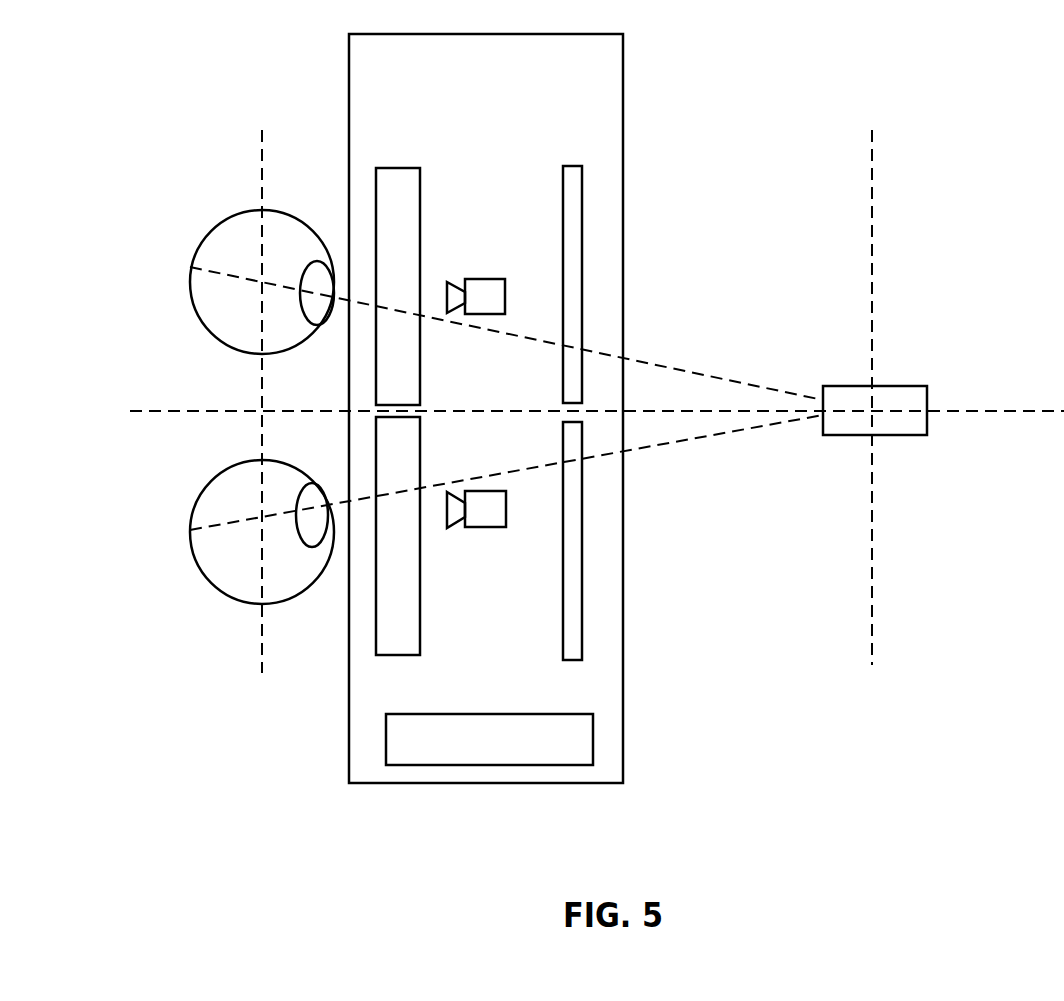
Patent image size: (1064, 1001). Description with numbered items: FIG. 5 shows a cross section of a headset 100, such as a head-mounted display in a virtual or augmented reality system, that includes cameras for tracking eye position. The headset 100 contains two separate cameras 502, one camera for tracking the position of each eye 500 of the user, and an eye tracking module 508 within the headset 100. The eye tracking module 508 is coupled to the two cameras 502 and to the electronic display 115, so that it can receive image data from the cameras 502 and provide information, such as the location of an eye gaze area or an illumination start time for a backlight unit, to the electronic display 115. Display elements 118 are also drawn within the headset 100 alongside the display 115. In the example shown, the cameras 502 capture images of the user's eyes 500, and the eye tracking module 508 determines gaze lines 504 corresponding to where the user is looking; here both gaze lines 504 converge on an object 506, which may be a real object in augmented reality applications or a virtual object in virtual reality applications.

The headset 100 is at (592, 36).
The display panel 118 is at (392, 180).
The electronic display 115 is at (576, 223).
The cameras 502 is at (476, 280).
The eye 500 is at (190, 281).
The gaze lines 504 is at (767, 431).
The object 506 is at (918, 395).
The eye tracking module 508 is at (593, 717).